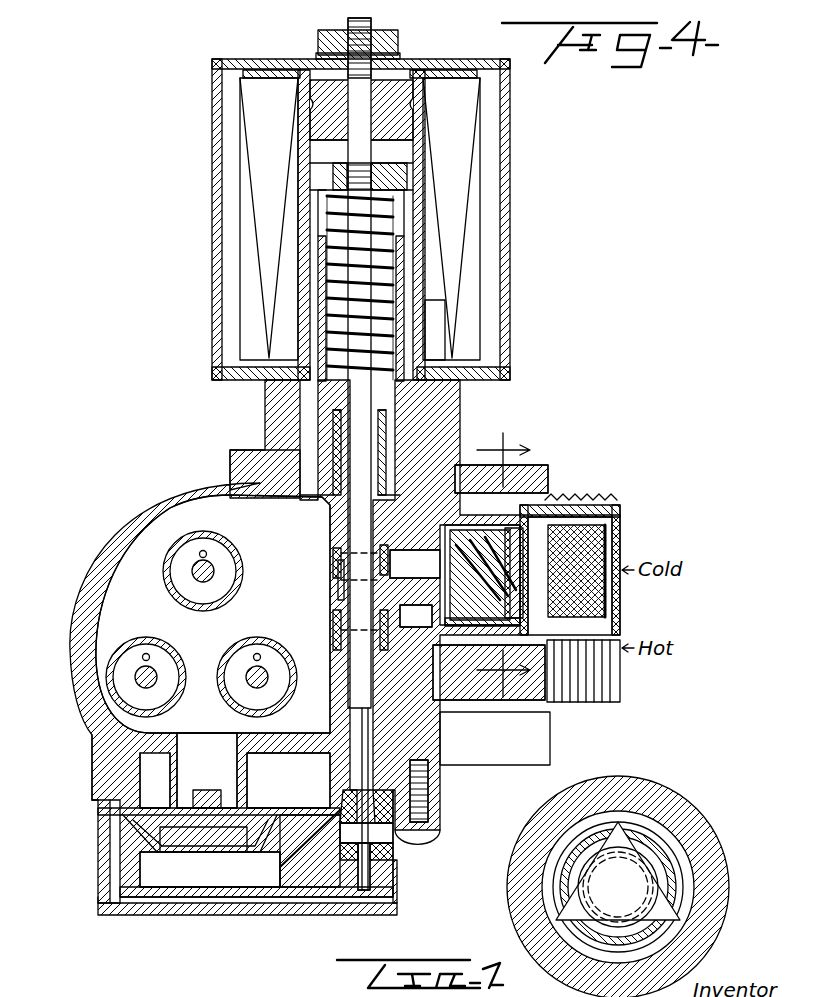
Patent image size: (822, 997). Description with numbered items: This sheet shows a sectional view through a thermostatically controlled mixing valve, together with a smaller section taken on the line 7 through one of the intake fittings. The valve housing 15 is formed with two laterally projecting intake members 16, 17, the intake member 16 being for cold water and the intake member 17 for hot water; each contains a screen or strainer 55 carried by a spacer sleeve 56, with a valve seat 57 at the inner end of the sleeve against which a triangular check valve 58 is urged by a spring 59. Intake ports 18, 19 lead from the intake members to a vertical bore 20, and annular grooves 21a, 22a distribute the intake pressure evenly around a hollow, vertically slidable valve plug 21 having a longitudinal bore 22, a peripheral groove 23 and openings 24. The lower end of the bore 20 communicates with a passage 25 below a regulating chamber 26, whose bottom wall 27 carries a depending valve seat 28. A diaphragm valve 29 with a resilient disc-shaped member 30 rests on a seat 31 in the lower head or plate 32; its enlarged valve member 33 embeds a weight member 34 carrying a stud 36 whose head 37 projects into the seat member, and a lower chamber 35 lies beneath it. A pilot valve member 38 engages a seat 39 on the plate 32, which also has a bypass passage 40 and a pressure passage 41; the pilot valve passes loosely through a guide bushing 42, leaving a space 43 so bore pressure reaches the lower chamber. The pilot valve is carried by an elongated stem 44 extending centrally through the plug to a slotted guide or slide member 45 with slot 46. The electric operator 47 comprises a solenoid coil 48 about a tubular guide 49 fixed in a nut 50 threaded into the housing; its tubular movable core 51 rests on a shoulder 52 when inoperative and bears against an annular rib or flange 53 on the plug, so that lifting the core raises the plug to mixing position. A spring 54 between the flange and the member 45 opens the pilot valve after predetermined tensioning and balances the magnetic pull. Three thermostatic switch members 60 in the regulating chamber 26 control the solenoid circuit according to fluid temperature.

In FIG. 4, the section line 7— 7 is at (494, 565).
In FIG. 4, the valve housing 15 is at (188, 470).
In FIG. 4, the intake member 16 is at (562, 497).
In FIG. 4, the intake member 17 is at (540, 690).
In FIG. 4, the intake port 18 is at (404, 550).
In FIG. 4, the intake port 19 is at (396, 612).
In FIG. 4, the bore 20 is at (436, 666).
In FIG. 4, the valve plug 21 is at (318, 548).
In FIG. 4, the annular groove 21a is at (334, 570).
In FIG. 4, the longitudinal bore 22 is at (330, 612).
In FIG. 4, the annular groove 22a is at (333, 632).
In FIG. 4, the peripheral groove 23 is at (333, 596).
In FIG. 4, the openings 24 is at (333, 556).
In FIG. 4, the passage 25 is at (283, 758).
In FIG. 4, the regulating chamber 26 is at (114, 588).
In FIG. 4, the bottom wall 27 is at (258, 750).
In FIG. 4, the valve seat 28 is at (240, 790).
In FIG. 4, the diaphragm valve 29 is at (255, 858).
In FIG. 4, the resilient disc-shaped member 30 is at (148, 848).
In FIG. 4, the seat 31 is at (302, 822).
In FIG. 4, the lower head or plate 32 is at (322, 886).
In FIG. 4, the valve member 33 is at (240, 810).
In FIG. 4, the disc or weight member 34 is at (130, 832).
In FIG. 4, the lower chamber 35 is at (185, 880).
In FIG. 4, the stud or stem 36 is at (208, 790).
In FIG. 4, the head 37 is at (200, 800).
In FIG. 4, the pilot valve member 38 is at (395, 845).
In FIG. 4, the seat 39 is at (395, 862).
In FIG. 4, the passage 40 is at (364, 897).
In FIG. 4, the pressure passage 41 is at (288, 876).
In FIG. 4, the guide bushing 42 is at (430, 797).
In FIG. 4, the space 43 is at (385, 770).
In FIG. 4, the stem 44 is at (372, 425).
In FIG. 4, the guide or slide member 45 is at (410, 165).
In FIG. 4, the slot 46 is at (330, 172).
In FIG. 4, the electric operator 47 is at (520, 300).
In FIG. 4, the solenoid coil 48 is at (470, 225).
In FIG. 4, the tubular guide 49 is at (300, 265).
In FIG. 4, the nut 50 is at (268, 406).
In FIG. 4, the movable core 51 is at (398, 440).
In FIG. 4, the shoulder 52 is at (480, 492).
In FIG. 4, the annular rib or flange 53 is at (430, 395).
In FIG. 4, the spring 54 is at (398, 305).
In FIG. 4, the screen or strainer 55 is at (592, 545).
In FIG. 4, the spacer sleeve 56 is at (585, 522).
In FIG. 4, the valve seat 57 is at (512, 548).
In FIG. 4, the check valve 58 is at (522, 565).
In FIG. 7, the check valve 58 is at (628, 840).
In FIG. 4, the spring 59 is at (515, 590).
In FIG. 4, the thermostatic switch members 60 is at (98, 686).